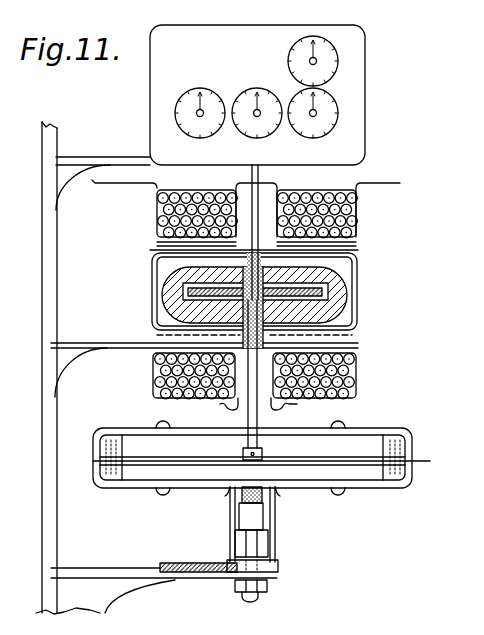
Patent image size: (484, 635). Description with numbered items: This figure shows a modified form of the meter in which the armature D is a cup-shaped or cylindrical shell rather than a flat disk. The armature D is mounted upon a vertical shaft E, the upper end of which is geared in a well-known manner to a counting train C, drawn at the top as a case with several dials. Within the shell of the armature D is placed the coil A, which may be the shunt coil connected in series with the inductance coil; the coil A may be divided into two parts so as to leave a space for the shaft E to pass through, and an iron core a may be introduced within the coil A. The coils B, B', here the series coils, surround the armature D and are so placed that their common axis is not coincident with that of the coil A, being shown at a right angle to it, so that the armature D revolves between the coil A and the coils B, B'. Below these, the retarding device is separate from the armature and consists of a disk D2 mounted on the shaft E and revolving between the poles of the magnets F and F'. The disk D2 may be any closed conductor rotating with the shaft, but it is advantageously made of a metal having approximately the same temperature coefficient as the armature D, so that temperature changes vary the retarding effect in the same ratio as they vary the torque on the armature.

The counting train C is at (257, 95).
The coil A is at (350, 277).
The iron core a is at (183, 293).
The armature D is at (357, 308).
The series coil B is at (175, 300).
The series coil B' is at (330, 300).
The shaft E is at (253, 420).
The magnet F is at (252, 454).
The magnet F' is at (270, 540).
The disk D2 is at (273, 462).